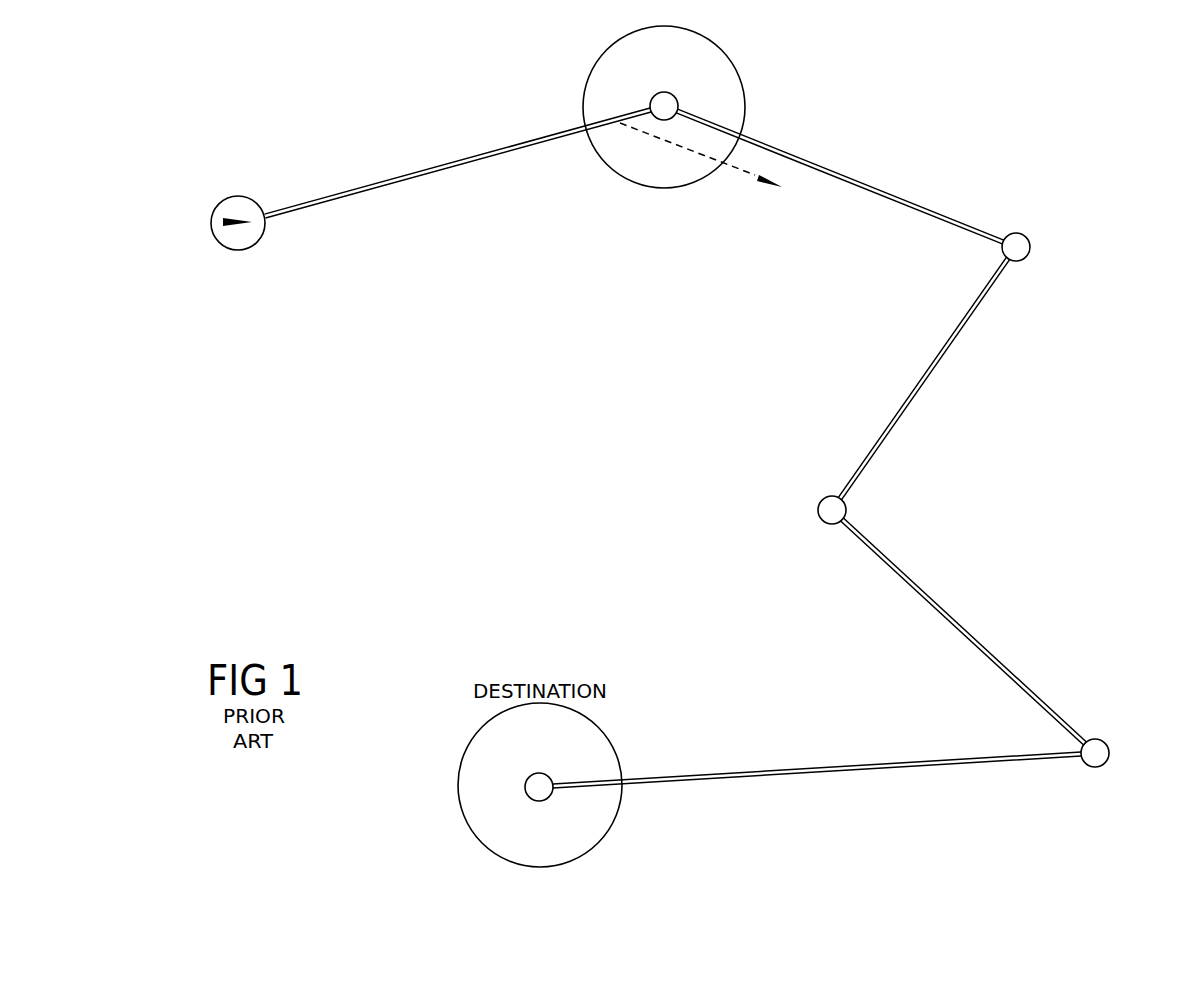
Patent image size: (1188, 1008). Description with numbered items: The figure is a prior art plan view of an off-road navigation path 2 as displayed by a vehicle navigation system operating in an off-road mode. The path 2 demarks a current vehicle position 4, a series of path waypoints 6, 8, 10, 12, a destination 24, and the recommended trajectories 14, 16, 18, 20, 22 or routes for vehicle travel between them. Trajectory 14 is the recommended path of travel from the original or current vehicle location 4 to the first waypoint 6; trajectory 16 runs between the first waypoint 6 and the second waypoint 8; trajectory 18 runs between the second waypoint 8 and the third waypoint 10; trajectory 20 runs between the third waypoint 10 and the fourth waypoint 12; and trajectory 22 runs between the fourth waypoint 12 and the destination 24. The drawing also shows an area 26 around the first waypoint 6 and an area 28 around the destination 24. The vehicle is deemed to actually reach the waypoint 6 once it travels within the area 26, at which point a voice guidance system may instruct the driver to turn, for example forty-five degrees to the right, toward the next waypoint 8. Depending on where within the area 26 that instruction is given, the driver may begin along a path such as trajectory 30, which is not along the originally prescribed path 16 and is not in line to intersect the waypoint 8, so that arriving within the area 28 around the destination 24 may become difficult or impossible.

The off-road navigation path 2 is at (214, 143).
The current vehicle position 4 is at (212, 215).
The first waypoint 6 is at (678, 101).
The second waypoint 8 is at (1030, 248).
The third waypoint 10 is at (846, 511).
The fourth waypoint 12 is at (1106, 746).
The trajectory 14 is at (390, 173).
The trajectory 16 is at (875, 186).
The trajectory 18 is at (925, 382).
The trajectory 20 is at (965, 629).
The trajectory 22 is at (1000, 763).
The destination 24 is at (550, 798).
The area around waypoint 26 is at (742, 74).
The area around destination 28 is at (602, 732).
The trajectory 30 is at (747, 176).